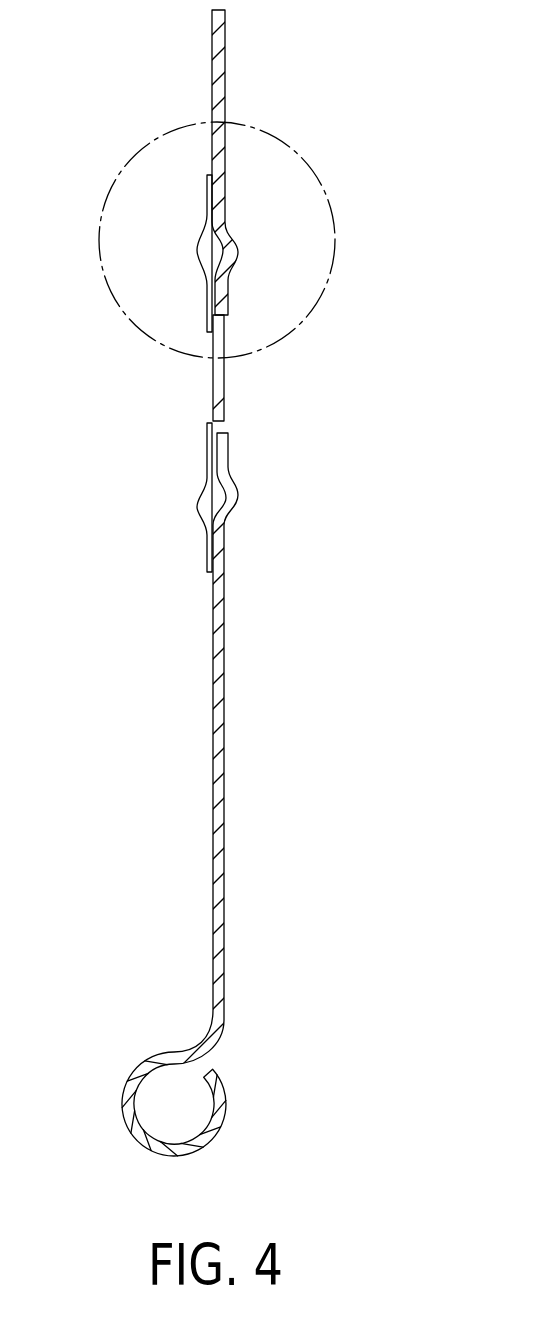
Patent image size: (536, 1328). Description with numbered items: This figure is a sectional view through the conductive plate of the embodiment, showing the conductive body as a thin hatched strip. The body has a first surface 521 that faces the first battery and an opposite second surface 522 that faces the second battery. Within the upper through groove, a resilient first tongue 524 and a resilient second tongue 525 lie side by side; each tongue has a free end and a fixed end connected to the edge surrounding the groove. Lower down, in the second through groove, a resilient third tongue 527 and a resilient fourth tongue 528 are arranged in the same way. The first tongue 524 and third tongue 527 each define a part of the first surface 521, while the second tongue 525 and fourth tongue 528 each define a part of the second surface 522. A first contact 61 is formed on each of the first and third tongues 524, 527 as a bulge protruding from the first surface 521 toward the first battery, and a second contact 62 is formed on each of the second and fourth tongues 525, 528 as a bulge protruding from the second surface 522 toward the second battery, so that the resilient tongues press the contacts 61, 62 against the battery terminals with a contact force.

The first surface 521 is at (225, 58).
The second surface 522 is at (212, 50).
The first tongue 524 is at (227, 202).
The second tongue 525 is at (207, 202).
The third tongue 527 is at (228, 463).
The fourth tongue 528 is at (200, 553).
The first contact 61 is at (237, 247).
The second contact 62 is at (193, 237).